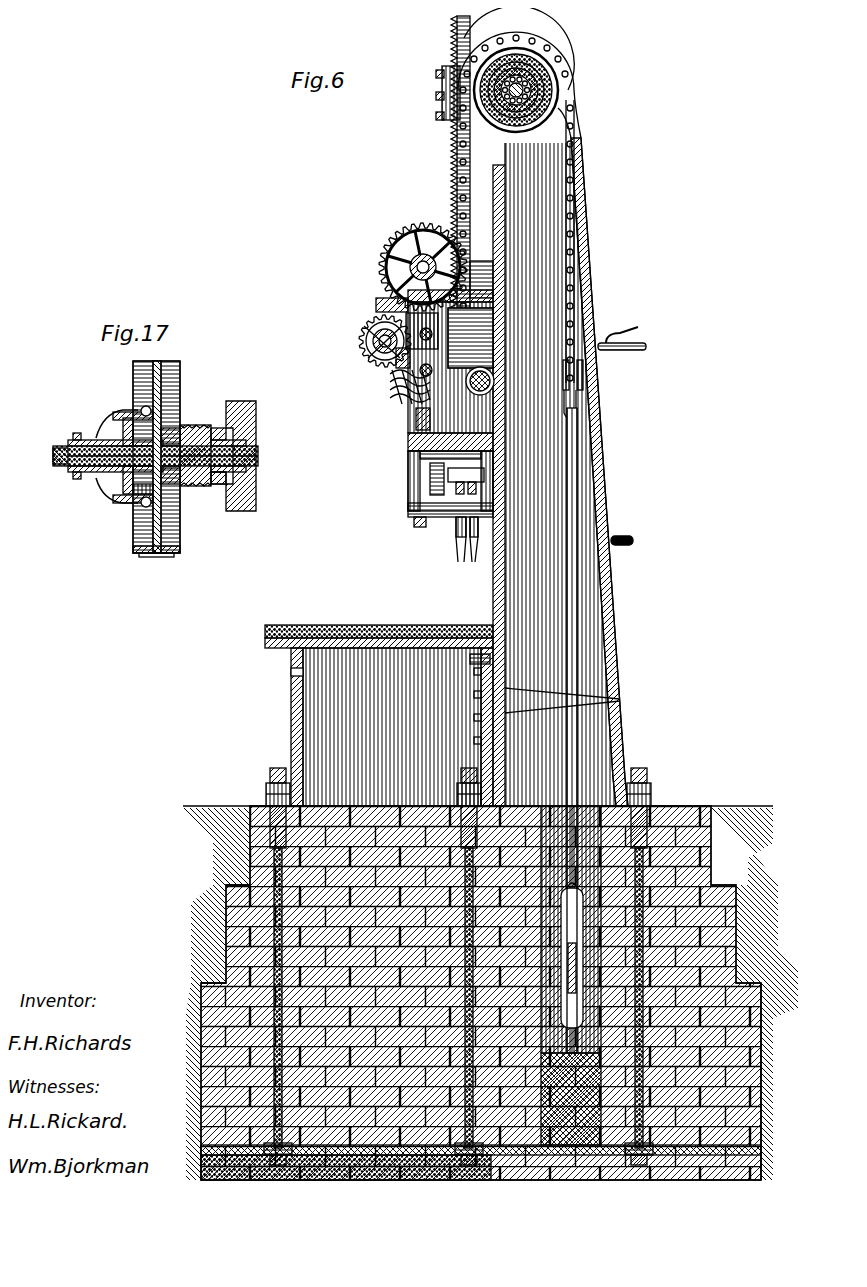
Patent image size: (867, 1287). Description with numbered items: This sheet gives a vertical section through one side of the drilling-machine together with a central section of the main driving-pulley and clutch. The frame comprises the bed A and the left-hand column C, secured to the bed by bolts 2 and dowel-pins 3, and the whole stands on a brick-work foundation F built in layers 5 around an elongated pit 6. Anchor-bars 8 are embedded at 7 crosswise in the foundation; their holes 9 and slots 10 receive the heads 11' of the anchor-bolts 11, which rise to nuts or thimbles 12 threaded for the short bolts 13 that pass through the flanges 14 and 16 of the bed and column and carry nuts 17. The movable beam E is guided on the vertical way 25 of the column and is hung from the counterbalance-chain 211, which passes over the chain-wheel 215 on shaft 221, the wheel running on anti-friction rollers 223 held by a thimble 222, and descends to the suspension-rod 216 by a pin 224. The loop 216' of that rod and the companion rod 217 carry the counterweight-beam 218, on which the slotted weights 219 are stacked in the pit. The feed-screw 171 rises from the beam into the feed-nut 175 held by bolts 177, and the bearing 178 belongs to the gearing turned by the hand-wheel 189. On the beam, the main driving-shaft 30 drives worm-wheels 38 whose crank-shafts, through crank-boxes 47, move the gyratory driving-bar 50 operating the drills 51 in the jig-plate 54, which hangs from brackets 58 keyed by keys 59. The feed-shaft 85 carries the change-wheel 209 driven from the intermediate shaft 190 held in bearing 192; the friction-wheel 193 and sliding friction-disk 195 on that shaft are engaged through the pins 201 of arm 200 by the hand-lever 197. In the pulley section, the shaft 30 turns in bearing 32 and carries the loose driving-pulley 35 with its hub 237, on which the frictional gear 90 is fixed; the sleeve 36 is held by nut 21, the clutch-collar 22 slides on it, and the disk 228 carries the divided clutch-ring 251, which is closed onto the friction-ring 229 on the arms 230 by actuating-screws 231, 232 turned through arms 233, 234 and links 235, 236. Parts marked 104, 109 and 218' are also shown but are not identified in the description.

In FIG. 6, the bolts 2 is at (567, 700).
In FIG. 6, the dowel-pins 3 is at (483, 642).
In FIG. 6, the layers 5 is at (193, 1012).
In FIG. 6, the pit 6 is at (705, 860).
In FIG. 6, the embedding location 7 is at (210, 1140).
In FIG. 6, the anchor-bars 8 is at (245, 1150).
In FIG. 6, the holes 9 is at (290, 1142).
In FIG. 6, the slots 10 is at (272, 1147).
In FIG. 6, the anchor-bolts 11 is at (468, 993).
In FIG. 6, the heads of anchor-bolts 11' is at (463, 1177).
In FIG. 6, the nuts or thimbles 12 is at (262, 820).
In FIG. 6, the studs or short bolts 13 is at (258, 788).
In FIG. 6, the flange of bed 14 is at (258, 772).
In FIG. 6, the flange of column 16 is at (645, 776).
In FIG. 6, the nuts 17 is at (266, 760).
In FIG. 17, the nut 21 is at (48, 460).
In FIG. 17, the clutch-collar 22 is at (72, 430).
In FIG. 6, the vertical way 25 is at (492, 216).
In FIG. 6, the main driving-shaft 30 is at (408, 408).
In FIG. 17, the main driving-shaft 30 is at (250, 447).
In FIG. 17, the bearing 32 is at (215, 478).
In FIG. 17, the driving-pulley 35 is at (152, 545).
In FIG. 17, the sleeve 36 is at (118, 468).
In FIG. 6, the worm-wheels 38 is at (383, 383).
In FIG. 6, the crank-box 47 is at (422, 472).
In FIG. 6, the gyratory driving-bar 50 is at (452, 478).
In FIG. 6, the drills 51 is at (464, 543).
In FIG. 6, the jig-plate 54 is at (400, 509).
In FIG. 6, the brackets 58 is at (400, 465).
In FIG. 6, the keys 59 is at (412, 446).
In FIG. 6, the feed-shaft 85 is at (402, 256).
In FIG. 17, the frictional gear 90 is at (185, 417).
In FIG. 6, the lever 104 is at (632, 343).
In FIG. 6, the handle 109 is at (622, 325).
In FIG. 6, the feed-screw 171 is at (443, 20).
In FIG. 6, the feed-nut 175 is at (437, 100).
In FIG. 6, the bolts 177 is at (428, 88).
In FIG. 6, the bearing 178 is at (473, 253).
In FIG. 6, the hand-wheel 189 is at (622, 530).
In FIG. 6, the intermediate shaft 190 is at (366, 346).
In FIG. 6, the bearing 192 is at (388, 352).
In FIG. 6, the worm-wheel 193 is at (355, 338).
In FIG. 6, the sliding friction-disk 195 is at (355, 325).
In FIG. 6, the hand-lever 197 is at (368, 297).
In FIG. 6, the arm 200 is at (398, 316).
In FIG. 6, the pins 201 is at (364, 338).
In FIG. 6, the change-wheel 209 is at (398, 230).
In FIG. 6, the counterbalance-chain 211 is at (568, 113).
In FIG. 6, the pulley 215 is at (545, 95).
In FIG. 6, the suspension-rod 216 is at (602, 730).
In FIG. 6, the loop 216' is at (528, 955).
In FIG. 6, the suspension-rod 217 is at (560, 1020).
In FIG. 6, the counterweight-beam 218 is at (417, 353).
In FIG. 6, the weight 218' is at (532, 962).
In FIG. 6, the weights 219 is at (555, 1003).
In FIG. 6, the shaft 221 is at (536, 80).
In FIG. 6, the thimble 222 is at (527, 78).
In FIG. 6, the anti-friction rollers 223 is at (516, 68).
In FIG. 6, the pin 224 is at (576, 388).
In FIG. 17, the disk 228 is at (118, 497).
In FIG. 17, the friction-ring 229 is at (145, 492).
In FIG. 17, the arms 230 is at (172, 362).
In FIG. 17, the actuating-screw 231 is at (136, 398).
In FIG. 17, the actuating-screw 232 is at (150, 500).
In FIG. 17, the arm 233 is at (128, 404).
In FIG. 17, the arm 234 is at (140, 549).
In FIG. 17, the link 235 is at (100, 416).
In FIG. 17, the link 236 is at (90, 476).
In FIG. 17, the hub 237 is at (215, 432).
In FIG. 17, the divided clutch-ring 251 is at (160, 422).
In FIG. 6, the bed A is at (283, 680).
In FIG. 6, the left-hand column C is at (601, 572).
In FIG. 6, the movable beam E is at (400, 433).
In FIG. 17, the movable beam E is at (248, 486).
In FIG. 6, the brick-work foundation F is at (218, 884).